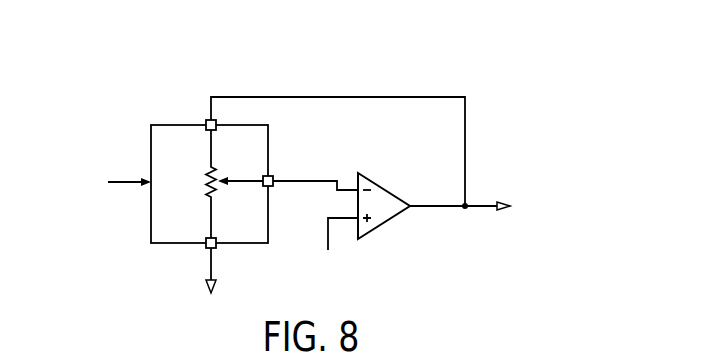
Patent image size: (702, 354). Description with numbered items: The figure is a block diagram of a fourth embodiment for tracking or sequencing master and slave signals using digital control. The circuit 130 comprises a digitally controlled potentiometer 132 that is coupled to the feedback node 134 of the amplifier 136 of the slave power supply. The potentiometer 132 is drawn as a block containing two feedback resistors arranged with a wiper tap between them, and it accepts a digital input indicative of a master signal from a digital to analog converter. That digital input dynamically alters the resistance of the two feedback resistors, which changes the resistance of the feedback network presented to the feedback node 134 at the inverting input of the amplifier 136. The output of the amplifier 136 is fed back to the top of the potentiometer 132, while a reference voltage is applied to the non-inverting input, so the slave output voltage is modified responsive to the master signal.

The circuit 130 is at (97, 79).
The digitally controlled potentiometer 132 is at (151, 213).
The feedback node 134 is at (307, 180).
The amplifier 136 is at (388, 188).